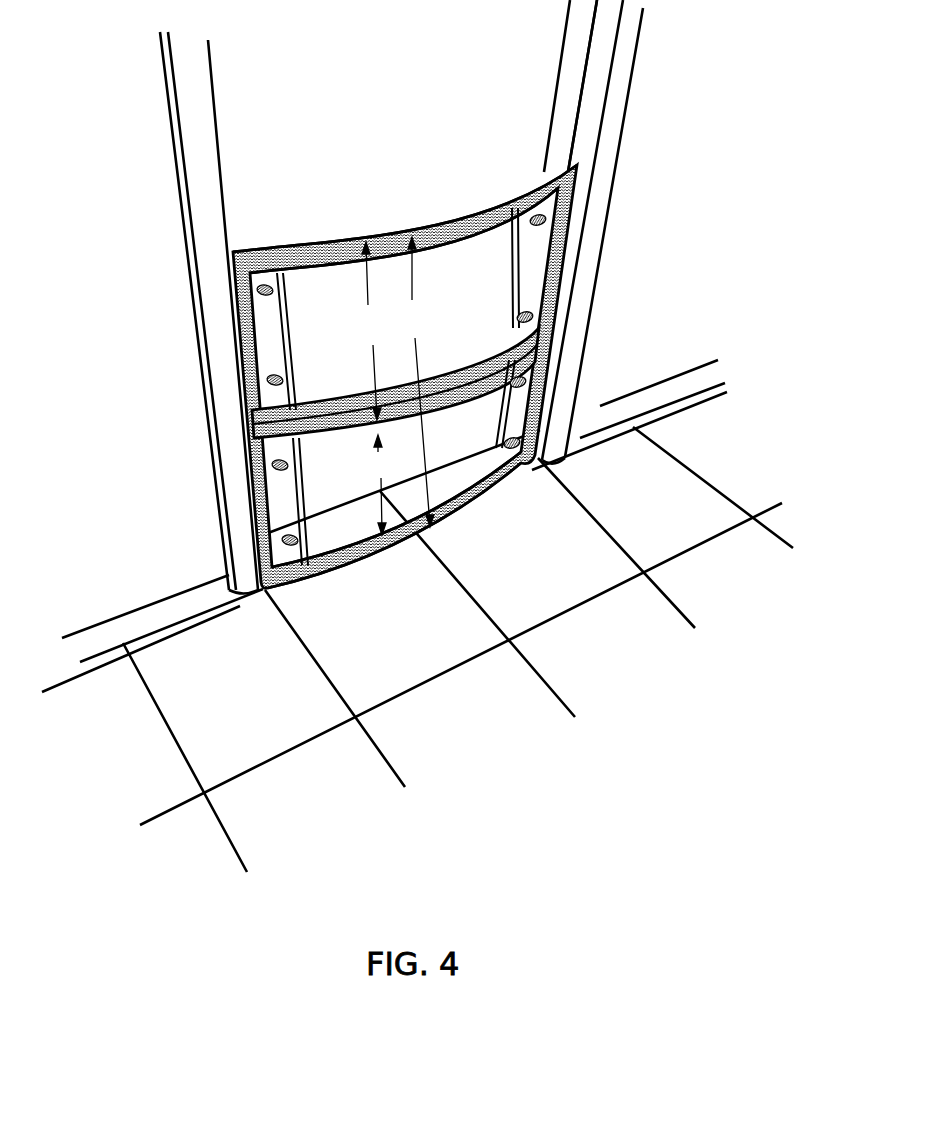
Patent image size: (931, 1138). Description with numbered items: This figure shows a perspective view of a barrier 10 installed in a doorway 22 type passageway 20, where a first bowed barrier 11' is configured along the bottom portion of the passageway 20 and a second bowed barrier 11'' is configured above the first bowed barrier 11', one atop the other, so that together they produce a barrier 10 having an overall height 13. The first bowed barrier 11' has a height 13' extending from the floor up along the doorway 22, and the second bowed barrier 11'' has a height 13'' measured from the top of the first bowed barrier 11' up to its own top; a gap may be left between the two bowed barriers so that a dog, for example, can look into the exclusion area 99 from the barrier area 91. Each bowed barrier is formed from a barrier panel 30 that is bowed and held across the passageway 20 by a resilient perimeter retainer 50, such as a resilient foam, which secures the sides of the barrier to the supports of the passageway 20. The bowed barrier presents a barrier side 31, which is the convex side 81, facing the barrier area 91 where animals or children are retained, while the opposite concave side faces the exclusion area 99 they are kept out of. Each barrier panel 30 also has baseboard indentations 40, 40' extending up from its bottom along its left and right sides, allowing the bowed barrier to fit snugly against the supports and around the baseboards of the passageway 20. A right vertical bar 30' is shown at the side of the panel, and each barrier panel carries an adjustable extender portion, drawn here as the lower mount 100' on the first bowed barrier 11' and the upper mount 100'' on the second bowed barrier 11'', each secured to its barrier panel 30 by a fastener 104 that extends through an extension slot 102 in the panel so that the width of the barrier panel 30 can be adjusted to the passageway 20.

The barrier 10 is at (302, 210).
The perimeter retainer 50 is at (418, 234).
The passageway 20 is at (592, 123).
The doorway 22 is at (587, 182).
The barrier side 31 is at (568, 220).
The barrier panel 30 is at (435, 382).
The right vertical bar 30' is at (582, 268).
The baseboard indentation 40 is at (417, 616).
The baseboard indentation 40' is at (629, 418).
The convex side 81 is at (462, 453).
The barrier area 91 is at (422, 626).
The exclusion area 99 is at (343, 362).
The fastener 104 is at (230, 257).
The extension slot 102 is at (230, 282).
The upper mount 100'' is at (203, 320).
The second bowed barrier 11'' is at (216, 408).
The lower mount 100' is at (214, 462).
The first bowed barrier 11' is at (225, 519).
The height 13 is at (419, 382).
The height 13'' is at (371, 331).
The height 13' is at (371, 485).